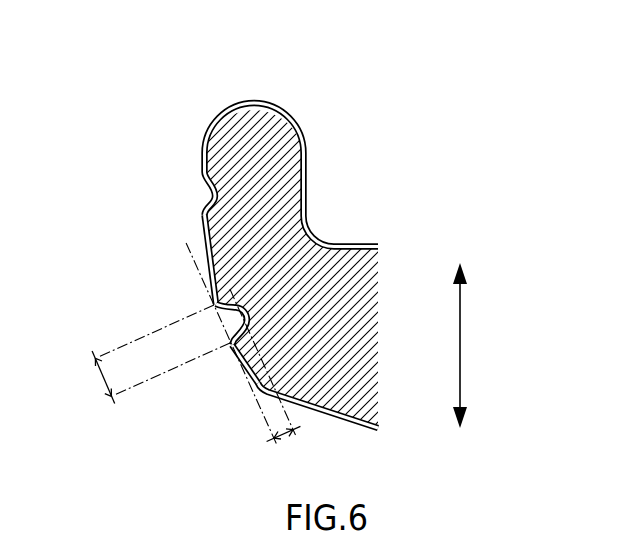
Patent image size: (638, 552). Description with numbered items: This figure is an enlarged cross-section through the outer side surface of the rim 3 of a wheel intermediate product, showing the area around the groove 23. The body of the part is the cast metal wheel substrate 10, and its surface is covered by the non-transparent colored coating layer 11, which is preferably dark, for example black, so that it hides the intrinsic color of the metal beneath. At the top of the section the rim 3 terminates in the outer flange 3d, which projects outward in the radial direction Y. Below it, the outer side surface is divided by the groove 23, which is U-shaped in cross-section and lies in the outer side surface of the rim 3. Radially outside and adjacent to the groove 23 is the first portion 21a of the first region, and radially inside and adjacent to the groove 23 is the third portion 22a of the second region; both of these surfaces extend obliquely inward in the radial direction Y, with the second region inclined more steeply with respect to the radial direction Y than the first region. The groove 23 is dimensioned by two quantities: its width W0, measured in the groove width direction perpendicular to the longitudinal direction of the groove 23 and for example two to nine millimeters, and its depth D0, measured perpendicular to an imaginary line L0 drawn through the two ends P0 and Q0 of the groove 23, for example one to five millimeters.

The rim 3 is at (358, 246).
The outer flange 3d is at (204, 130).
The wheel substrate 10 is at (264, 140).
The colored coating layer 11 is at (247, 101).
The first portion 21a is at (201, 222).
The third portion 22a is at (243, 380).
The groove 23 is at (236, 323).
The imaginary line L0 is at (201, 274).
The end of the groove P0 is at (212, 306).
The end of the groove Q0 is at (231, 348).
The width of the groove W0 is at (83, 377).
The depth of the groove D0 is at (267, 383).
The radial direction Y is at (462, 347).